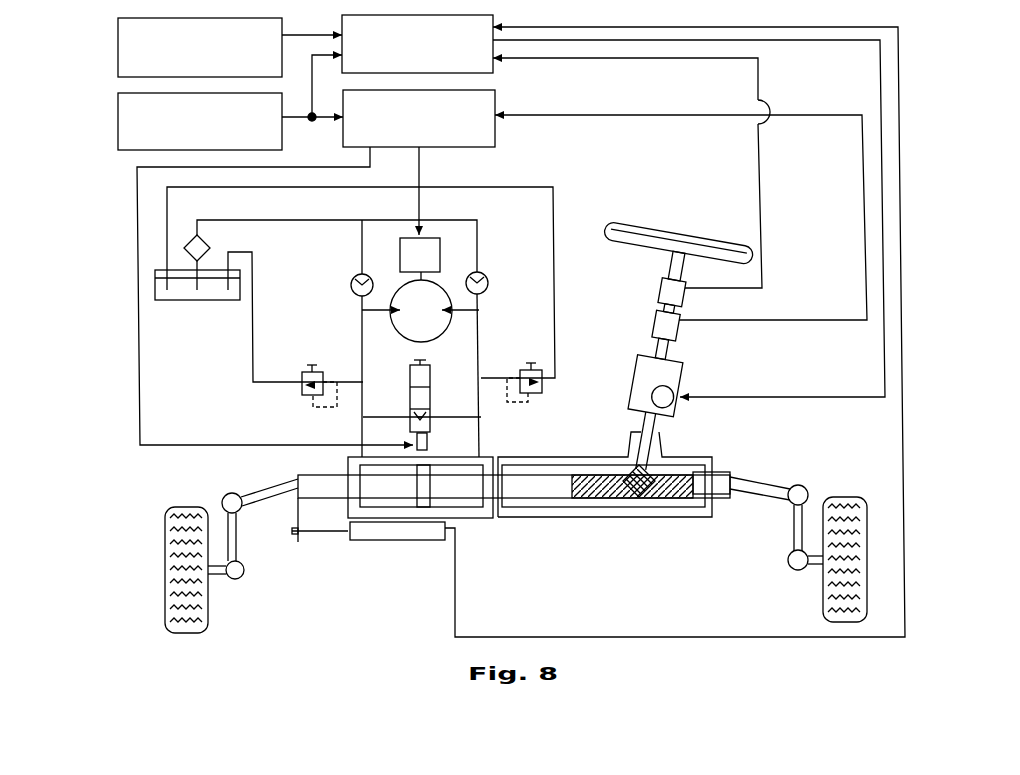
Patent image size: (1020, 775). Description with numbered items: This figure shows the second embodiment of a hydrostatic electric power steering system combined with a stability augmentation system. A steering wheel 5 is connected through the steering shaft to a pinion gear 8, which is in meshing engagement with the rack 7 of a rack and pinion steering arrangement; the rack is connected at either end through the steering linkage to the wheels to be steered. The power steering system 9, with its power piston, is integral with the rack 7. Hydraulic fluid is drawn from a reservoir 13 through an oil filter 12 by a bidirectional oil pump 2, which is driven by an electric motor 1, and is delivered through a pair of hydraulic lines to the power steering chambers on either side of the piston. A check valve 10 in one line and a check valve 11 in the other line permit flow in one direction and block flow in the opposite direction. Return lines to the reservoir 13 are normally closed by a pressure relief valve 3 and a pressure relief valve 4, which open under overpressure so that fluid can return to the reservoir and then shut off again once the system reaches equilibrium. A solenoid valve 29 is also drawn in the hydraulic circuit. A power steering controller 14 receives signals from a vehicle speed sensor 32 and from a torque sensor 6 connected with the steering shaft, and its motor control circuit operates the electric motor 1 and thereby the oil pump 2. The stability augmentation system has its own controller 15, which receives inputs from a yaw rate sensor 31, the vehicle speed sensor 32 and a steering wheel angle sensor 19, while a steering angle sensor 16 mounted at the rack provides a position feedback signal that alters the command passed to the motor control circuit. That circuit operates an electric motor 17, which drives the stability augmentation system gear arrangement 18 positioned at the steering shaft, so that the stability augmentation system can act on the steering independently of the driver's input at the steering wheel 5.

The electric motor 1 is at (438, 256).
The oil pump 2 is at (398, 321).
The pressure relief valve 3 is at (300, 380).
The pressure relief valve 4 is at (537, 375).
The steering wheel 5 is at (678, 223).
The torque sensor 6 is at (765, 328).
The rack 7 is at (531, 508).
The pinion gear 8 is at (634, 499).
The power steering system 9 is at (428, 485).
The check valve 10 is at (356, 278).
The check valve 11 is at (483, 273).
The oil filter 12 is at (190, 234).
The reservoir 13 is at (155, 290).
The power steering controller 14 is at (419, 118).
The stability augmentation system controller 15 is at (417, 44).
The steering angle sensor 16 is at (382, 532).
The electric motor 17 is at (672, 403).
The stability augmentation system gear arrangement 18 is at (658, 372).
The steering wheel angle sensor 19 is at (687, 302).
The solenoid valve 29 is at (410, 422).
The yaw rate sensor 31 is at (200, 47).
The vehicle speed sensor 32 is at (200, 121).